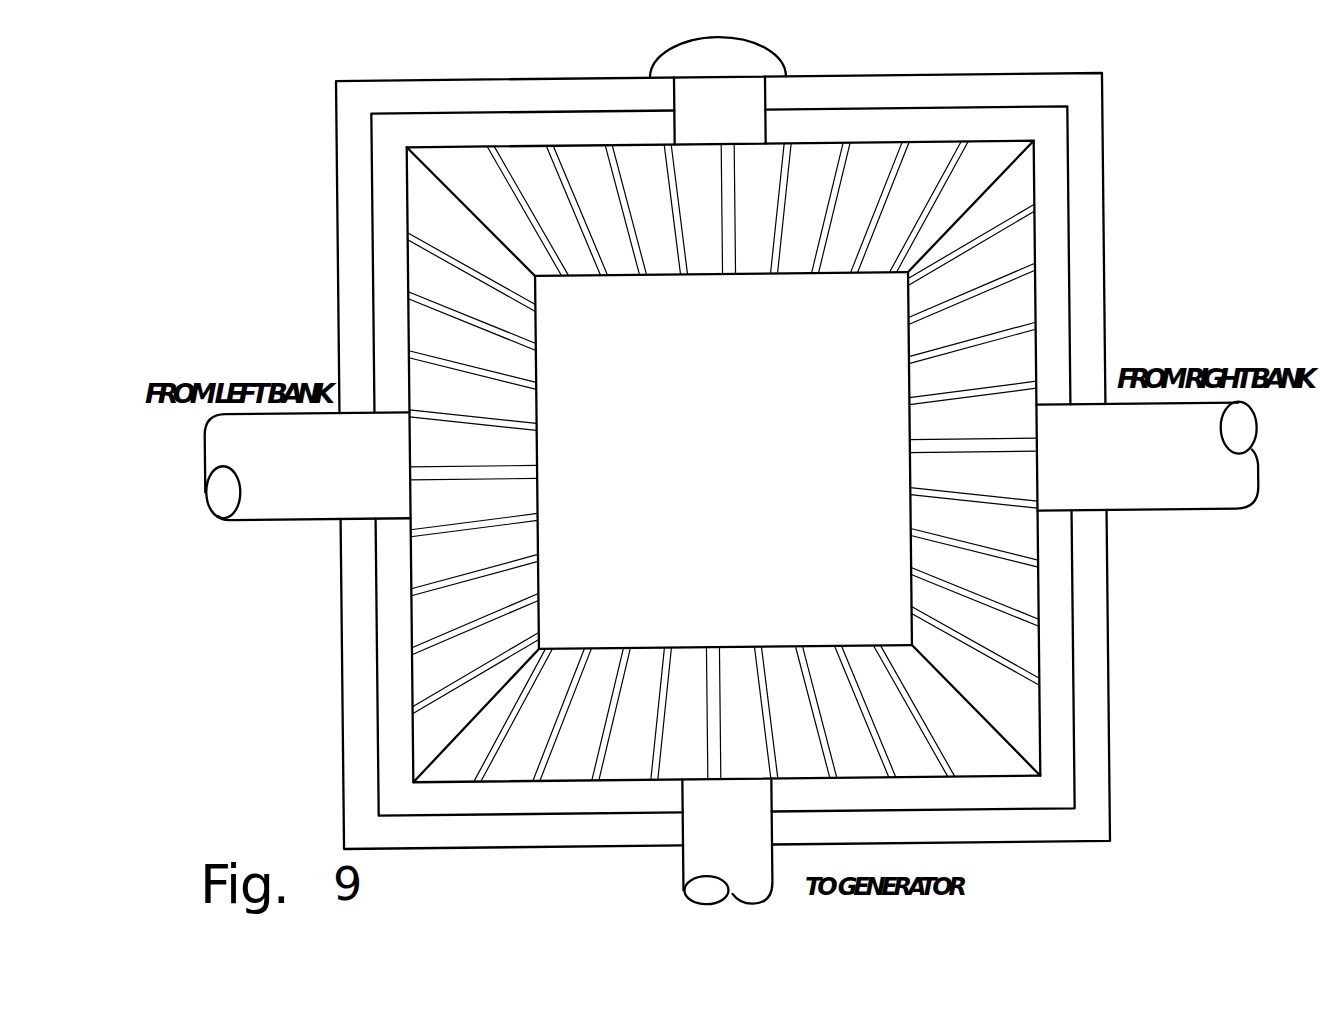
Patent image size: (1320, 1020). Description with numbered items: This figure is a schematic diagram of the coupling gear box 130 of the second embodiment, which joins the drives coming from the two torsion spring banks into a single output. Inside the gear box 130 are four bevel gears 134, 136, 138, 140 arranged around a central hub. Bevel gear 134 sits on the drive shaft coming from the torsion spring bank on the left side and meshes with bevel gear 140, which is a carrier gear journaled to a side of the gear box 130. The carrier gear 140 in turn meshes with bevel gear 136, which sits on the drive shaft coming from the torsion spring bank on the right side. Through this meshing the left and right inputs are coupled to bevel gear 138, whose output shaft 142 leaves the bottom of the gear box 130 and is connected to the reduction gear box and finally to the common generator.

The gear box 130 is at (1130, 145).
The bevel gear 134 is at (432, 290).
The bevel gear 136 is at (997, 310).
The bevel gear 138 is at (588, 718).
The carrier gear 140 is at (823, 187).
The output shaft 142 is at (738, 842).